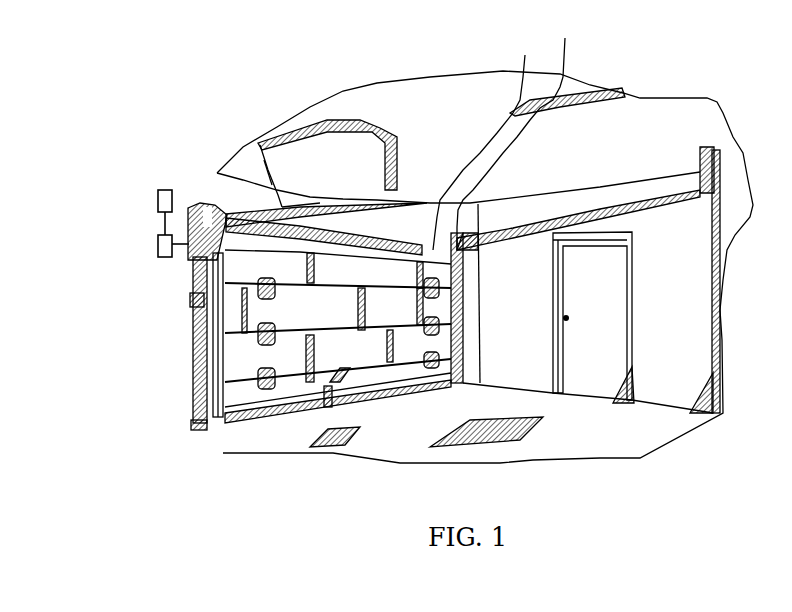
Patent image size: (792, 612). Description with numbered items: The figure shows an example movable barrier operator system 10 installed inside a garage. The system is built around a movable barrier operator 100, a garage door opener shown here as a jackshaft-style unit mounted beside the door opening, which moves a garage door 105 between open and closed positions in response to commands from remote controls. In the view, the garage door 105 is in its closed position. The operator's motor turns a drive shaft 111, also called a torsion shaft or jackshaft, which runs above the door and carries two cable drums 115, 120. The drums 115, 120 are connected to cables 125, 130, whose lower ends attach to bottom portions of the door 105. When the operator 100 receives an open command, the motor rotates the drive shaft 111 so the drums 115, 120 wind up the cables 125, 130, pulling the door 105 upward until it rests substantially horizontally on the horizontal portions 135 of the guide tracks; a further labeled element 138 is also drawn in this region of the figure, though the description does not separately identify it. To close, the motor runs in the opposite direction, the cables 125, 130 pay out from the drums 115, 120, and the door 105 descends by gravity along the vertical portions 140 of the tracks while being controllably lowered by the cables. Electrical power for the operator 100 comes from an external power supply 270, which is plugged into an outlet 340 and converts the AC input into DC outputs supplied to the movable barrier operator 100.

The movable barrier operator system 10 is at (333, 163).
The movable barrier operator 100 is at (297, 276).
The garage door 105 is at (338, 338).
The drive shaft 111 is at (485, 144).
The drum 115 is at (209, 270).
The drum 120 is at (541, 135).
The cable 125 is at (230, 222).
The cable 130 is at (511, 396).
The horizontal portion of track 135 is at (290, 153).
The panel edge 138 is at (248, 149).
The vertical portion of guide track 140 is at (175, 343).
The external power supply 270 is at (157, 248).
The outlet 340 is at (157, 202).